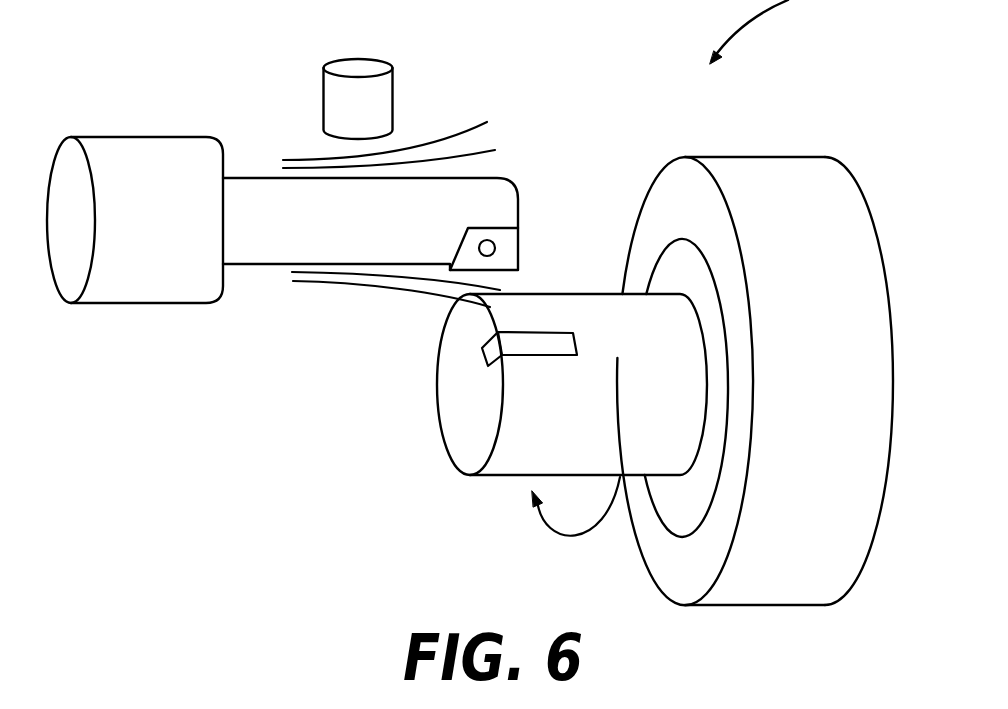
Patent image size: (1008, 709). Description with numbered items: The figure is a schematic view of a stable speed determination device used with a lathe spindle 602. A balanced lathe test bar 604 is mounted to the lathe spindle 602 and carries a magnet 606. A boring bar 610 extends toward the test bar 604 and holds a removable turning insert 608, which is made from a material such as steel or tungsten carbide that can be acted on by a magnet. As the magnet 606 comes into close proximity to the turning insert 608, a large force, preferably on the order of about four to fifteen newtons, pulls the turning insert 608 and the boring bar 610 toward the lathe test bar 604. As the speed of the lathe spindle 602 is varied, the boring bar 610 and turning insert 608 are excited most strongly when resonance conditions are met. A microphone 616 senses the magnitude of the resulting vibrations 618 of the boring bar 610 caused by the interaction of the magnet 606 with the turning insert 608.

The lathe spindle 602 is at (838, 242).
The balanced lathe test bar 604 is at (531, 422).
The magnet 606 is at (525, 340).
The removable turning insert 608 is at (479, 249).
The boring bar 610 is at (277, 205).
The microphone 616 is at (335, 108).
The vibrations 618 is at (418, 144).